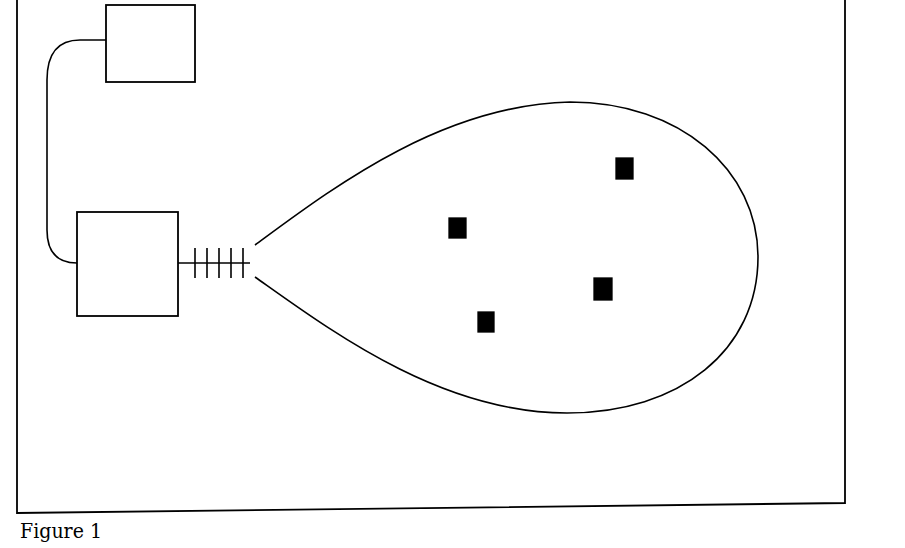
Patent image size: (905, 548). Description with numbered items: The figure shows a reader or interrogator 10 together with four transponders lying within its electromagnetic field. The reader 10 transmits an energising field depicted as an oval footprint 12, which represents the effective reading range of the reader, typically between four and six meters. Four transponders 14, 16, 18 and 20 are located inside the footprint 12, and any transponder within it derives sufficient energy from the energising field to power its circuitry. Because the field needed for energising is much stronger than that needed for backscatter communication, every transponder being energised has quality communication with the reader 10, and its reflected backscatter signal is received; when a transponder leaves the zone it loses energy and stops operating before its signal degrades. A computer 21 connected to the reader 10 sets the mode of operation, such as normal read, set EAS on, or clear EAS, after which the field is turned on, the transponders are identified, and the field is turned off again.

The reader 10 is at (100, 212).
The oval footprint 12 is at (693, 135).
The transponder 14 is at (466, 218).
The transponder 16 is at (493, 312).
The transponder 18 is at (610, 278).
The transponder 20 is at (632, 160).
The computer 21 is at (195, 50).